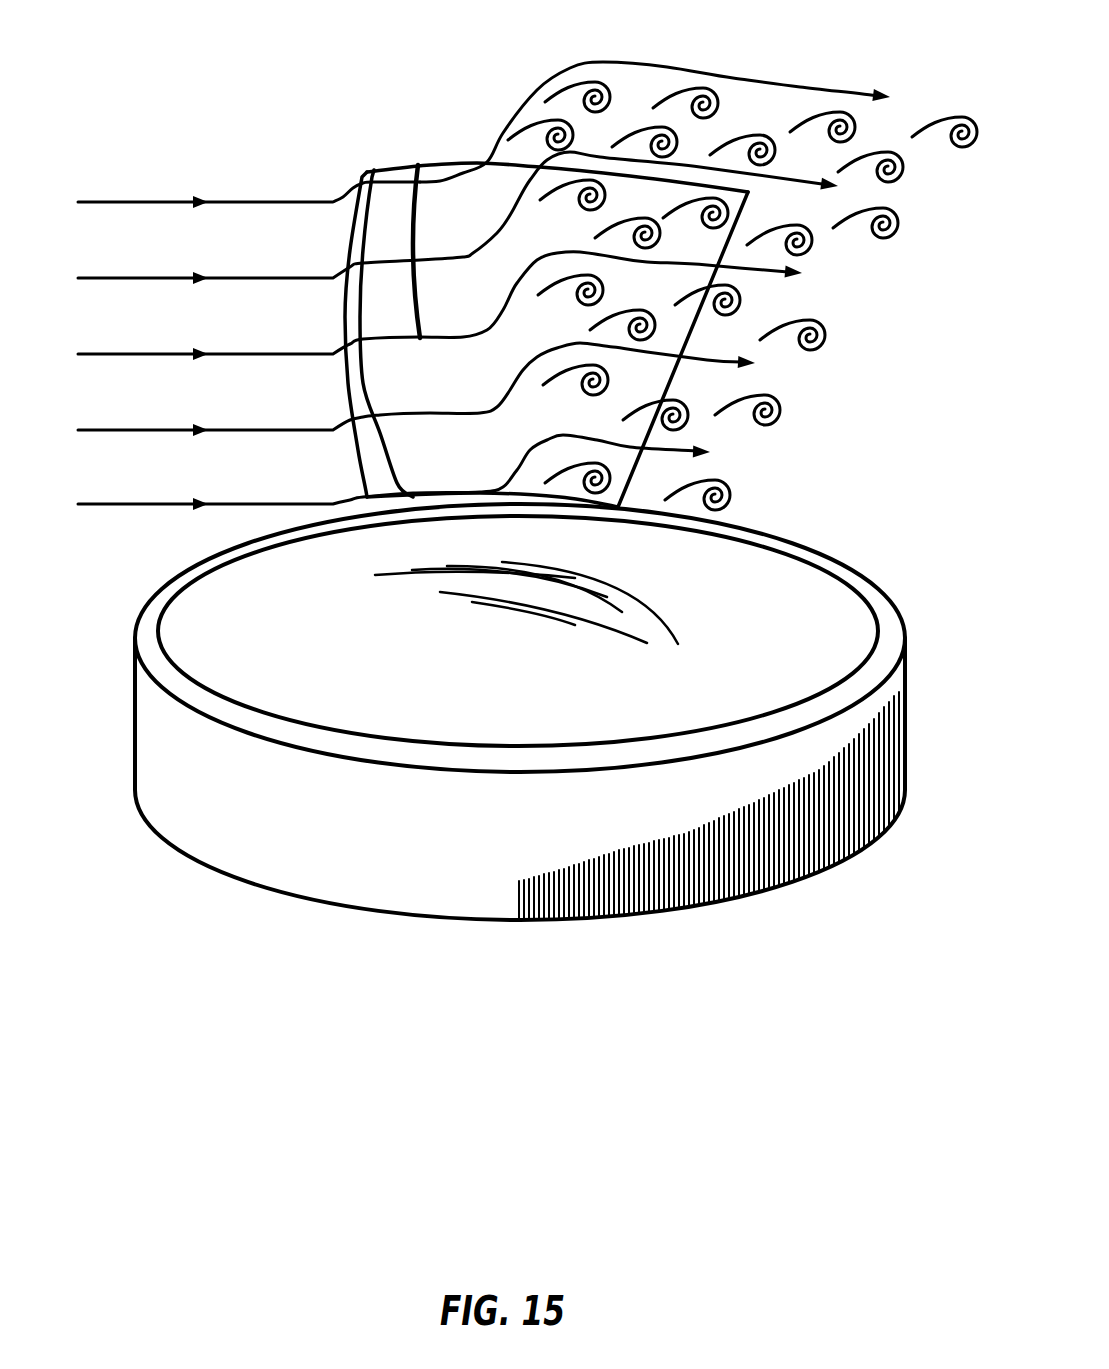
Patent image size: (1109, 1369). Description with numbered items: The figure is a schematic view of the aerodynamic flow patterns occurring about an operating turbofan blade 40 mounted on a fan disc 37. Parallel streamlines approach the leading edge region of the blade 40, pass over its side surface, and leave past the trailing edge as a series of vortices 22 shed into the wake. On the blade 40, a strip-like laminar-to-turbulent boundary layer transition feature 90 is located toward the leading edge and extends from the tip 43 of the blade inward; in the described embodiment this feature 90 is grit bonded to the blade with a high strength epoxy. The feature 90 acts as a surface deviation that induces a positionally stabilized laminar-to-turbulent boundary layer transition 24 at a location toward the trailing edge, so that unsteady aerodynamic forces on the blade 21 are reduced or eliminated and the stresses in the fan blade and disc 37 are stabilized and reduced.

The blade 21 is at (473, 403).
The vortices 22 is at (735, 143).
The laminar-to-turbulent boundary layer transition 24 is at (508, 103).
The hub 37 is at (285, 869).
The turbofan blade 40 is at (388, 150).
The tip 43 is at (602, 160).
The laminar-to-turbulent boundary layer transition feature 90 is at (410, 222).